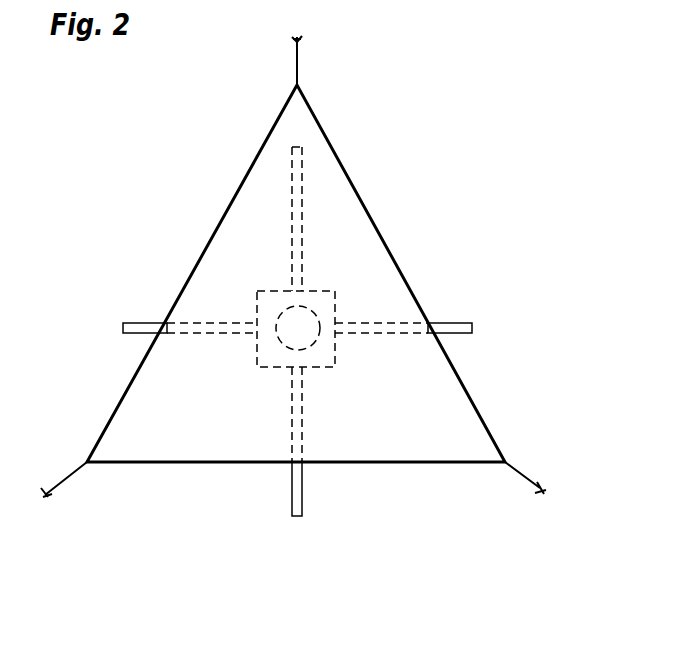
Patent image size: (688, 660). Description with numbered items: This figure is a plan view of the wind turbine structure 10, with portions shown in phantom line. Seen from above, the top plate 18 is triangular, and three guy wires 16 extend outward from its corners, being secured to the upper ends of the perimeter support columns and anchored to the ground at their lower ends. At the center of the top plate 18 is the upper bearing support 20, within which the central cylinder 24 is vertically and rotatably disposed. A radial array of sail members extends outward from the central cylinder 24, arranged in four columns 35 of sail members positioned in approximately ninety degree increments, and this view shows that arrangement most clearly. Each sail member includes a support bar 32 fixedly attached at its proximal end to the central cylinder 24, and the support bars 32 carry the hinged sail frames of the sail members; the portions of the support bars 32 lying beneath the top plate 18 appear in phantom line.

The wind turbine structure 10 is at (452, 120).
The guy wires 16 is at (297, 62).
The top plate 18 is at (380, 277).
The upper bearing support 20 is at (323, 350).
The central cylinder 24 is at (304, 322).
The support bar 32 is at (302, 208).
The columns of sail members 35 is at (283, 218).